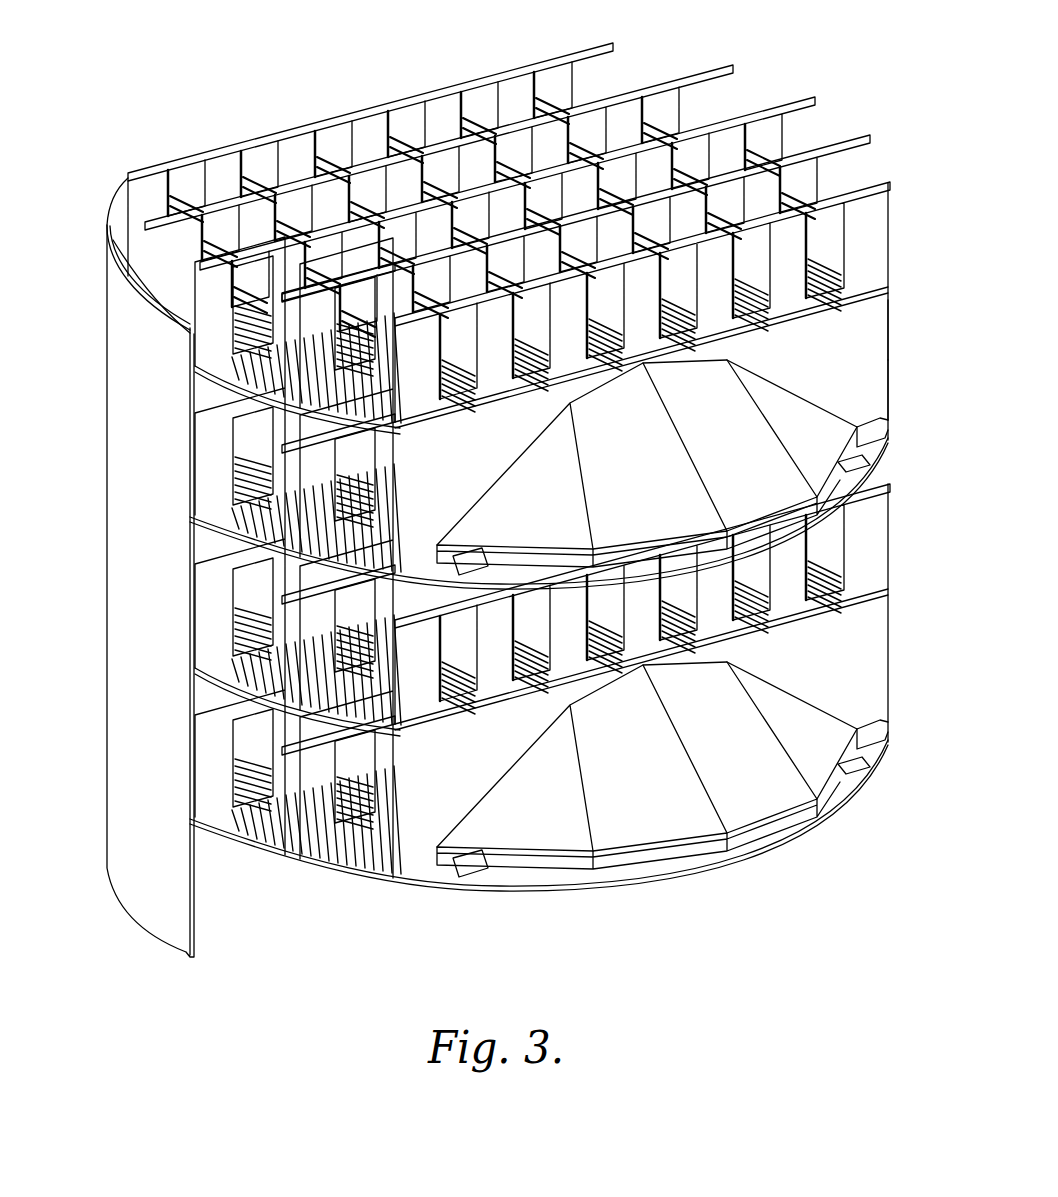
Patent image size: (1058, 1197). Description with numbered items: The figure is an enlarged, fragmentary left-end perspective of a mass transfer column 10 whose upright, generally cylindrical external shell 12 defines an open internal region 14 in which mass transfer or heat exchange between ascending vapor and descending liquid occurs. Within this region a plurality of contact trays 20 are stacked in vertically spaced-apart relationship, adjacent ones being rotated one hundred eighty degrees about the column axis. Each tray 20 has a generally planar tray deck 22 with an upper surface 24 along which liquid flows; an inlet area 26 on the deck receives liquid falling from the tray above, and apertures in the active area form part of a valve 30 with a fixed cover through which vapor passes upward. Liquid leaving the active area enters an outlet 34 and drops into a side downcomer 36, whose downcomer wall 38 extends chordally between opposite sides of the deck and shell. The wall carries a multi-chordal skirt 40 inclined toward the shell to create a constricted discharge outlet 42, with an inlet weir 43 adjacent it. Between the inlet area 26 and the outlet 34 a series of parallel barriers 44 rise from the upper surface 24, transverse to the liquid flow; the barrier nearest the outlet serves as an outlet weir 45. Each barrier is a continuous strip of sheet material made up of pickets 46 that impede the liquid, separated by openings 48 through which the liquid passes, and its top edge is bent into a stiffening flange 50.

The mass transfer column 10 is at (100, 342).
The external shell 12 is at (120, 400).
The open internal region 14 is at (124, 226).
The contact tray 20 is at (205, 504).
The tray deck 22 is at (240, 533).
The upper surface 24 is at (220, 516).
The inlet area 26 is at (450, 570).
The valve 30 is at (238, 825).
The outlet 34 is at (876, 294).
The downcomer 36 is at (875, 328).
The downcomer wall 38 is at (868, 380).
The multi-chordal skirt 40 is at (648, 481).
The downcomer discharge outlet 42 is at (787, 500).
The inlet weir 43 is at (681, 550).
The barrier 44 is at (719, 88).
The outlet weir 45 is at (870, 228).
The picket 46 is at (297, 157).
The opening 48 is at (180, 178).
The stiffening flange 50 is at (614, 43).